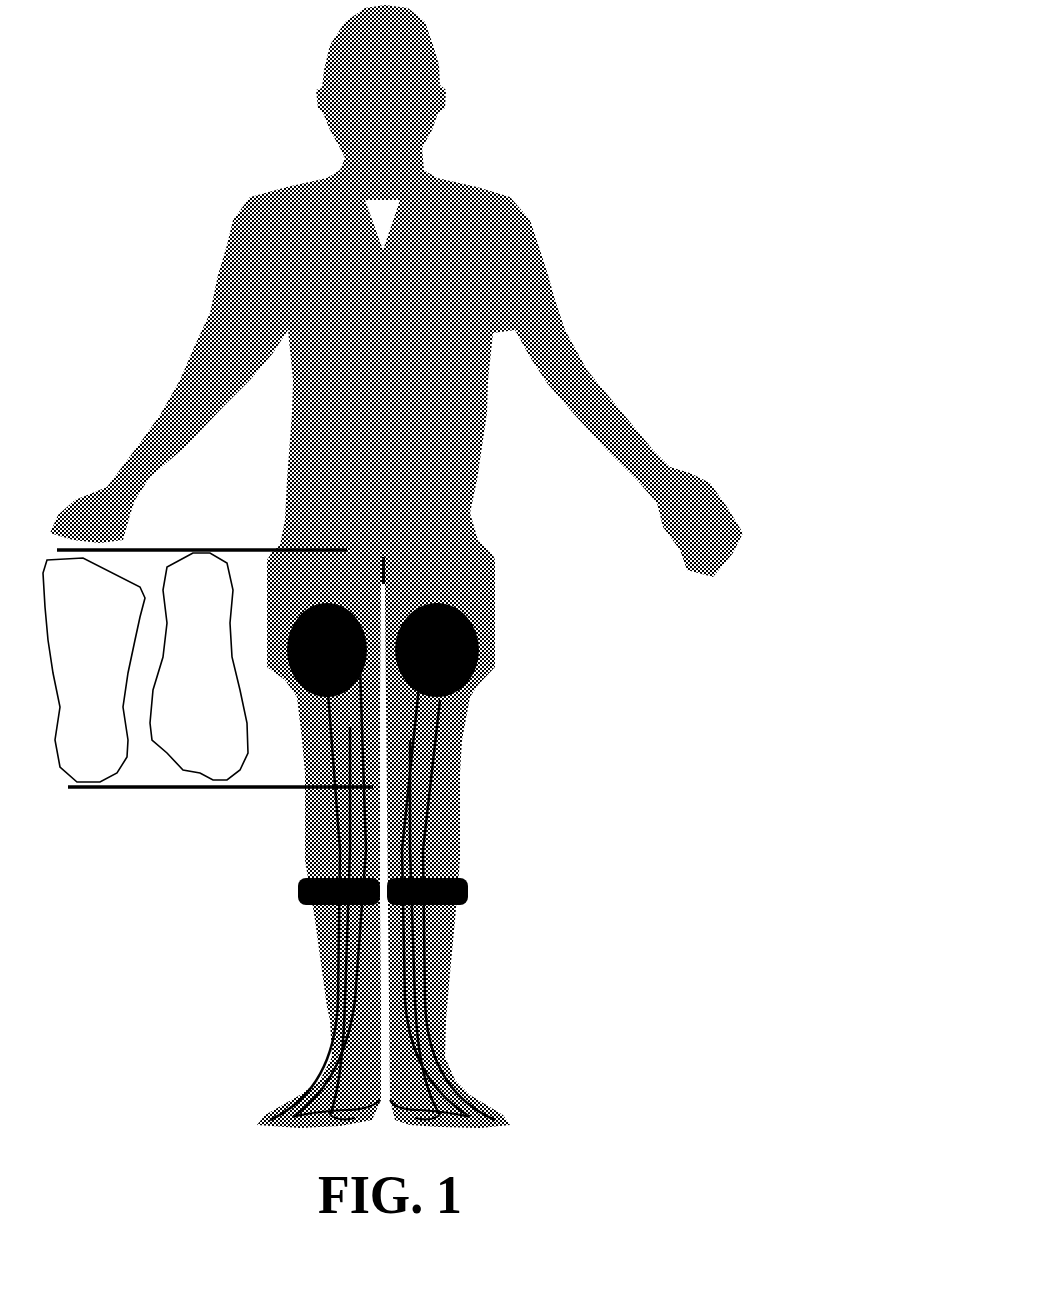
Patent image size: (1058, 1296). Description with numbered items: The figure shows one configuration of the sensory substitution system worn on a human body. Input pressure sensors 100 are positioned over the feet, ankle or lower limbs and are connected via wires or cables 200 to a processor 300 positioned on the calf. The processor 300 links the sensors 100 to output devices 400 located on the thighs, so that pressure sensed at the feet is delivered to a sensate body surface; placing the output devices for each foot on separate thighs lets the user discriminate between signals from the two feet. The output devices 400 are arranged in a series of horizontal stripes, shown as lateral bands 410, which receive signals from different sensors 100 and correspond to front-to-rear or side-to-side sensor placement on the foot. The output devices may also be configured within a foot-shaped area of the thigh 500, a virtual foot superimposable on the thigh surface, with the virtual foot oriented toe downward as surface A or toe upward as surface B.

The input pressure sensors 100 is at (503, 1122).
The wires or cables 200 is at (443, 973).
The processor 300 is at (470, 892).
The output devices 400 is at (443, 720).
The lateral bands of output devices 410 is at (455, 622).
The foot-shaped area of the thigh 500 is at (208, 694).